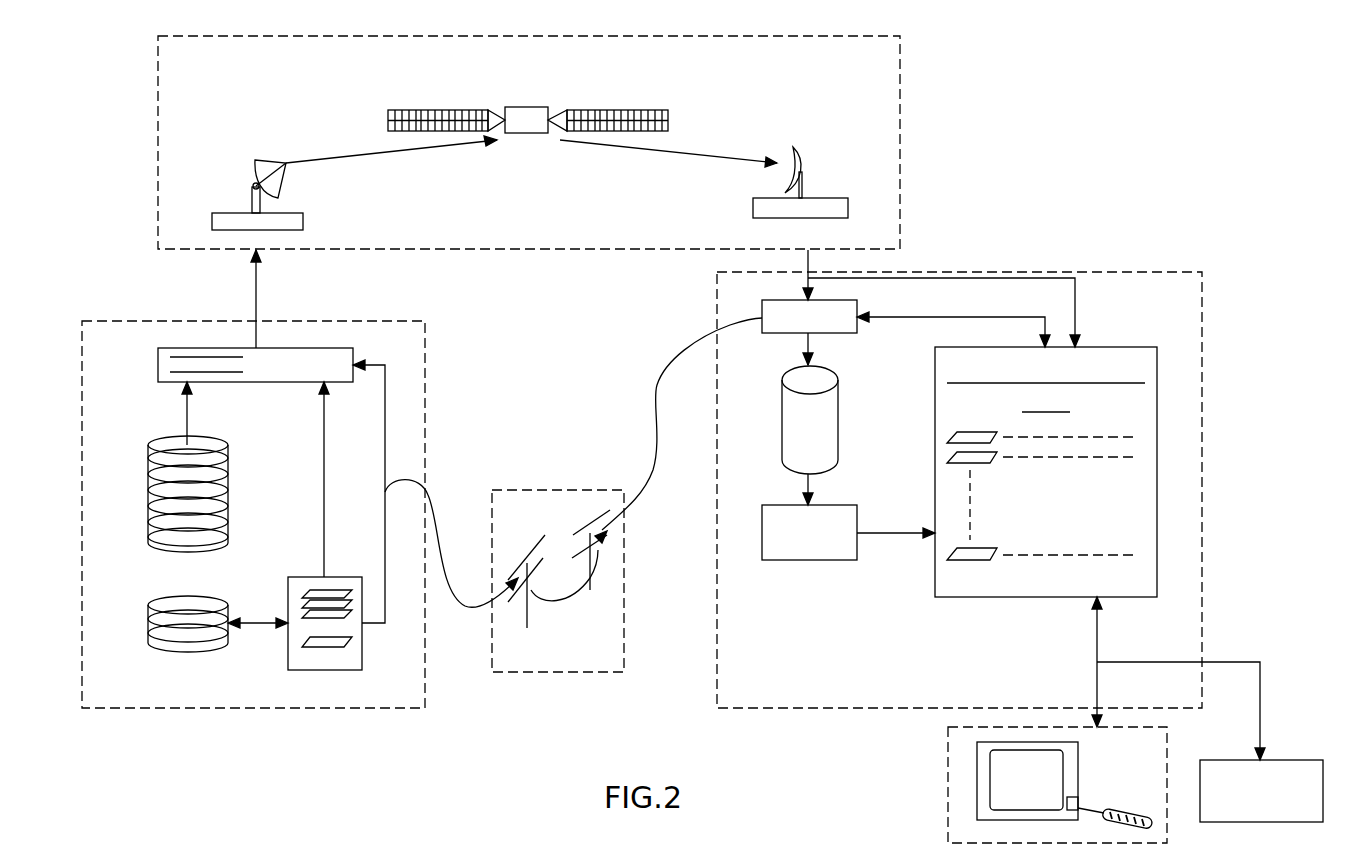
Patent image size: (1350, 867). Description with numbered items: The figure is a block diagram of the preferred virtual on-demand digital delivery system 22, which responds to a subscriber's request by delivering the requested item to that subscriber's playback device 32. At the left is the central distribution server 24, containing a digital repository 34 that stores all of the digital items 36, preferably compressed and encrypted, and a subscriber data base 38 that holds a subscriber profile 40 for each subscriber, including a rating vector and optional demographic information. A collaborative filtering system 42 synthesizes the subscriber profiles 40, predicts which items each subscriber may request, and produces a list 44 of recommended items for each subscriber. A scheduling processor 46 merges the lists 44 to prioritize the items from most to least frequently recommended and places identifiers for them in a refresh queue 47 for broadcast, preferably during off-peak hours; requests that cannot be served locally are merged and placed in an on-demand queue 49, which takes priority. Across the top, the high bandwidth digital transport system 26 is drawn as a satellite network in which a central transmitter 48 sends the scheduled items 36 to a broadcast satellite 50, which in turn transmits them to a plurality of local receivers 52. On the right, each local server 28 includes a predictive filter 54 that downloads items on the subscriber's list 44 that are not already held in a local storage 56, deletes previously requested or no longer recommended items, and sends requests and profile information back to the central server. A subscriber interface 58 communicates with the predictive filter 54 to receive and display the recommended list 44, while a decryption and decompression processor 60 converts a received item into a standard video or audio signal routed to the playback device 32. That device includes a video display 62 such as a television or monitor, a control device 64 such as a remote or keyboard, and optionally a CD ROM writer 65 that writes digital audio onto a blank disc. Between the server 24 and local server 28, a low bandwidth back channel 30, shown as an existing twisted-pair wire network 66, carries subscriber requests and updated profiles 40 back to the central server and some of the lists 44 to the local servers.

The virtual on-demand digital delivery system 22 is at (1110, 125).
The central distribution server 24 is at (82, 492).
The high bandwidth digital transport system 26 is at (155, 133).
The local server 28 is at (1200, 383).
The low bandwidth back channel 30 is at (589, 581).
The playback device 32 is at (948, 782).
The digital repository 34 is at (212, 447).
The digital items 36 is at (187, 491).
The subscriber data base 38 is at (159, 622).
The subscriber profile 40 is at (155, 622).
The collaborative filtering system 42 is at (301, 601).
The list of recommended items 44 is at (332, 595).
The scheduling processor 46 is at (223, 371).
The refresh queue 47 is at (252, 371).
The on-demand queue 49 is at (200, 378).
The central transmitter 48 is at (254, 185).
The broadcast satellite 50 is at (530, 133).
The local receivers 52 is at (805, 190).
The predictive filter 54 is at (778, 310).
The local storage 56 is at (820, 378).
The subscriber interface 58 is at (1090, 347).
The decryption and decompression processor 60 is at (773, 515).
The video display 62 is at (1072, 771).
The control device 64 is at (1125, 812).
The CD ROM writer 65 is at (1290, 758).
The twisted-pair wire network 66 is at (548, 628).